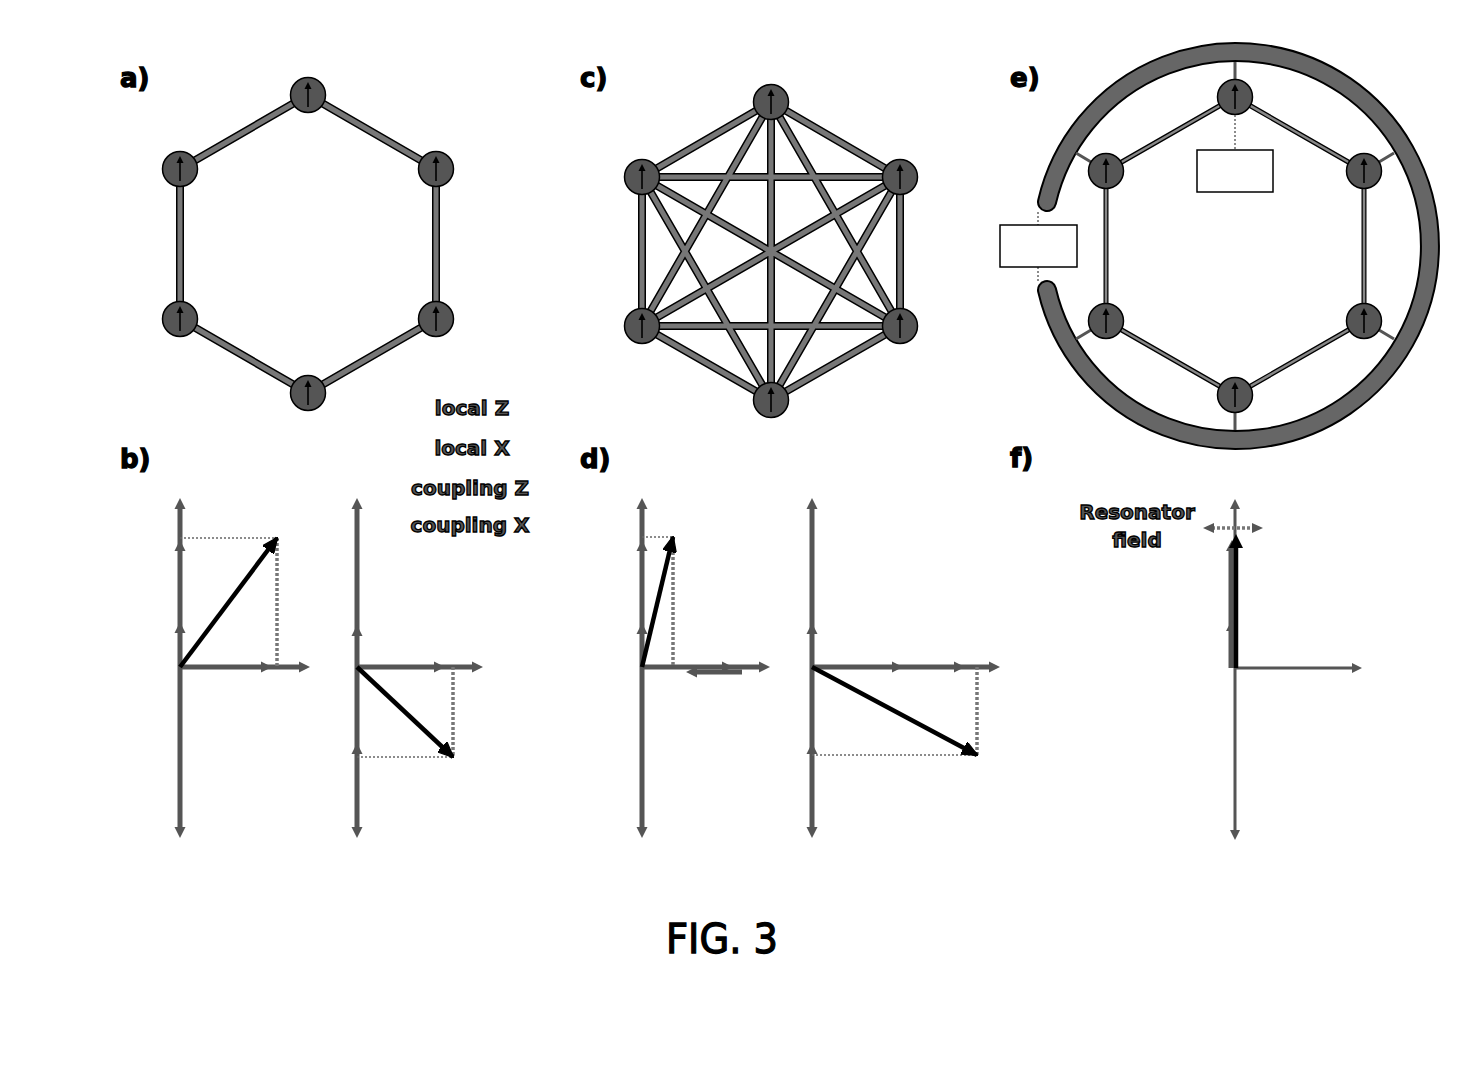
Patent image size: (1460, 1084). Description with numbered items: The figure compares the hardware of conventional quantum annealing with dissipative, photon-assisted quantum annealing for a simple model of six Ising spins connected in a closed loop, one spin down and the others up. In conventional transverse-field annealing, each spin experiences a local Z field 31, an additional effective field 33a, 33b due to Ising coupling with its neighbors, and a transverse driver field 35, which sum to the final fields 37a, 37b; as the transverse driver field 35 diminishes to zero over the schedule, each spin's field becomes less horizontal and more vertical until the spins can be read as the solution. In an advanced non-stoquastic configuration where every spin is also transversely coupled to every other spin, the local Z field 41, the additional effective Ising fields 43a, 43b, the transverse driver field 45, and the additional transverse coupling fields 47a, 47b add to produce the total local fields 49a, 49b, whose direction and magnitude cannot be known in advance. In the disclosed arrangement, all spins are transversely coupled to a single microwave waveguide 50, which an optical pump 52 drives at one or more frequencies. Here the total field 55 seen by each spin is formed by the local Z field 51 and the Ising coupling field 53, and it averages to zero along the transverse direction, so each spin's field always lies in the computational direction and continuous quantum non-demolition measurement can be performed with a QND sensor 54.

The local Z field 31 is at (178, 640).
The additional effective field 33a is at (178, 565).
The additional effective field 33b is at (355, 713).
The transverse driver field 35 is at (242, 672).
The final field 37a is at (248, 558).
The final field 37b is at (407, 730).
The local Z field 41 is at (640, 642).
The additional effective Ising field 43a is at (640, 567).
The additional effective Ising field 43b is at (810, 717).
The transverse driver field 45 is at (708, 662).
The additional transverse coupling field 47a is at (708, 680).
The additional transverse coupling field 47b is at (940, 662).
The total local field 49a is at (670, 534).
The total local field 49b is at (927, 733).
The microwave waveguide 50 is at (1070, 375).
The local Z field 51 is at (1226, 642).
The optical pump 52 is at (1018, 221).
The Ising coupling field 53 is at (1228, 578).
The QND sensor 54 is at (1235, 194).
The total field 55 is at (1243, 600).